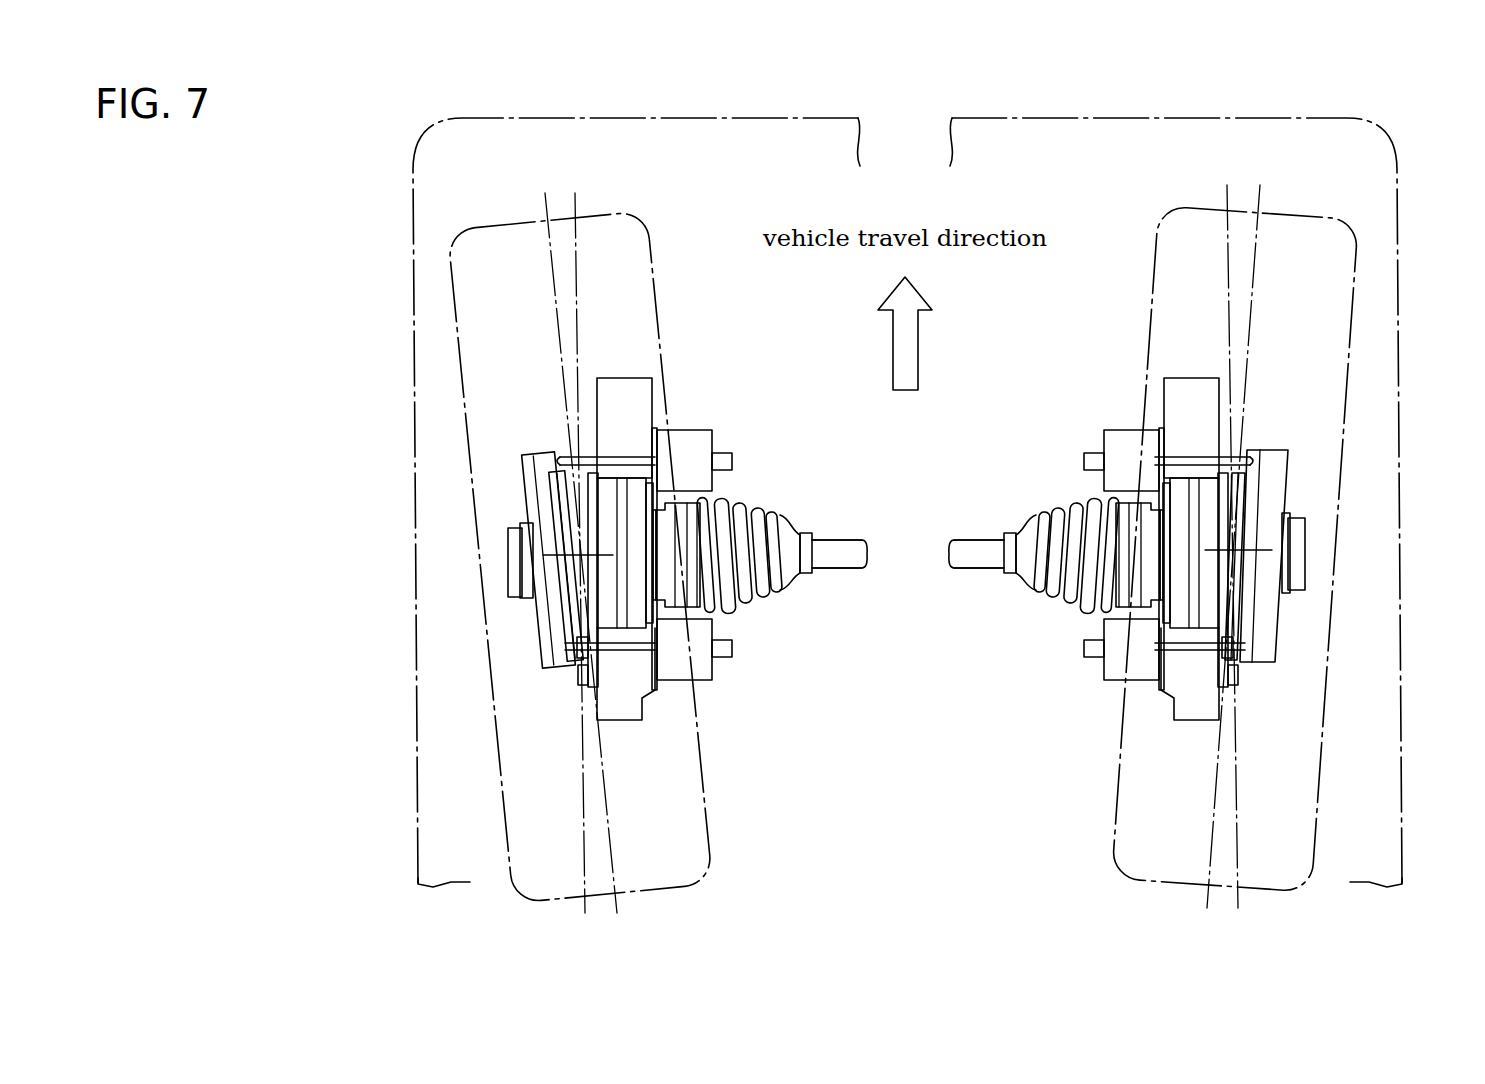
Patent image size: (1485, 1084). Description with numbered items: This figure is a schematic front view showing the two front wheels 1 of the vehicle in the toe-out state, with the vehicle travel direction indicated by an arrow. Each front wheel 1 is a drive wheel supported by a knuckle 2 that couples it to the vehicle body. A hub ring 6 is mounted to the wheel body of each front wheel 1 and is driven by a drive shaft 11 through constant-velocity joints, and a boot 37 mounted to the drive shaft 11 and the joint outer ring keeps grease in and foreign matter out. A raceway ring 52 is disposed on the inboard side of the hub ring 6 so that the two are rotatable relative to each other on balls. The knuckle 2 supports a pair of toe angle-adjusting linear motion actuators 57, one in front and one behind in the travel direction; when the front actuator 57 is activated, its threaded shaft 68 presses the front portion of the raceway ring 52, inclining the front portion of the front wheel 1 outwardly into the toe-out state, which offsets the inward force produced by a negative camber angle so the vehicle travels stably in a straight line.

The front wheel 1 is at (467, 228).
The knuckle 2 is at (638, 378).
The hub ring 6 is at (530, 482).
The drive shaft 11 is at (908, 594).
The boot 37 is at (770, 512).
The raceway ring 52 is at (553, 512).
The toe angle-adjusting linear motion actuator 57 is at (721, 424).
The threaded shaft 68 is at (618, 458).